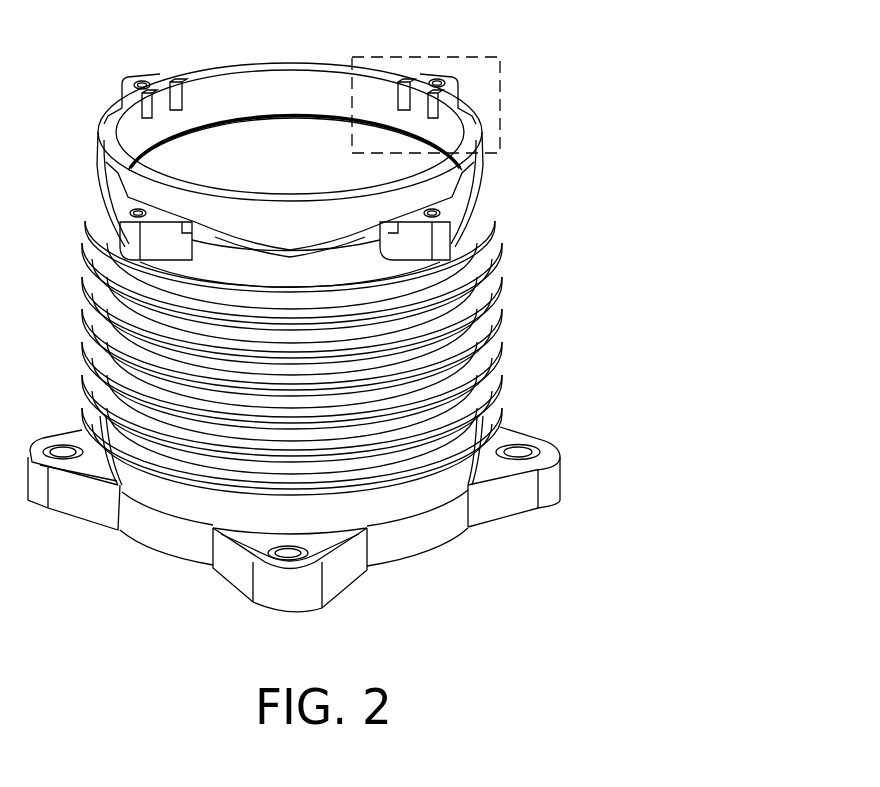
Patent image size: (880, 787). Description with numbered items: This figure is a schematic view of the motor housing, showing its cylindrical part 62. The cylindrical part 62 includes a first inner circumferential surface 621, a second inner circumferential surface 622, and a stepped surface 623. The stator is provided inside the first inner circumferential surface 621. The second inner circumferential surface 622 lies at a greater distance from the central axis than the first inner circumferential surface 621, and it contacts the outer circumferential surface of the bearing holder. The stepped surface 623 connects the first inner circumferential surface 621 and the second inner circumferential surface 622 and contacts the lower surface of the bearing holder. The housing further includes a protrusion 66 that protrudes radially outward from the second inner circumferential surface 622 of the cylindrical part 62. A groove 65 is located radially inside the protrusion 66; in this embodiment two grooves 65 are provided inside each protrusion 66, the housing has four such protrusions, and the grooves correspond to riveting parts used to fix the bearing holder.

The cylindrical part 62 is at (460, 204).
The first inner circumferential surface 621 is at (212, 157).
The second inner circumferential surface 622 is at (286, 94).
The stepped surface 623 is at (248, 114).
The groove 65 is at (428, 99).
The protrusion 66 is at (447, 77).